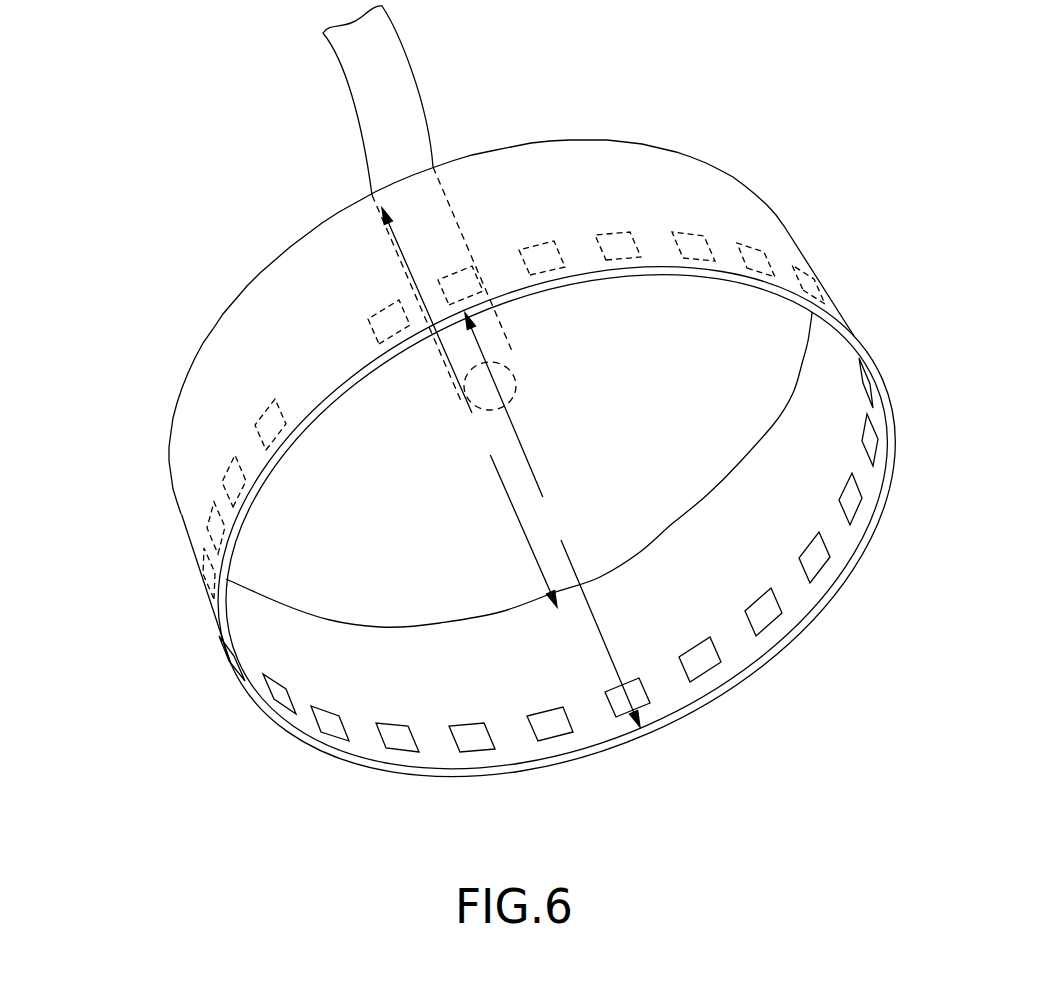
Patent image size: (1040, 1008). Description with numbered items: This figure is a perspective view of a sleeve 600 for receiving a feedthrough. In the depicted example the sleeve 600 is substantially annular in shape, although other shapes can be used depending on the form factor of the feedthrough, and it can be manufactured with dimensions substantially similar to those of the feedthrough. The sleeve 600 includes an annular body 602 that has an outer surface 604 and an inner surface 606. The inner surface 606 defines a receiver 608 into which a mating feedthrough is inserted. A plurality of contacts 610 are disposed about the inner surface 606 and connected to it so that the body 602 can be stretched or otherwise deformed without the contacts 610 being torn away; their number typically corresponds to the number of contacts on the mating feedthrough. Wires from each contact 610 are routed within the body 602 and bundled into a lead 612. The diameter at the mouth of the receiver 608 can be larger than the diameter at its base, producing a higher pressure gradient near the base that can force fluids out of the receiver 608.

The sleeve 600 is at (824, 100).
The annular body 602 is at (525, 172).
The outer surface 604 is at (684, 176).
The inner surface 606 is at (847, 403).
The receiver 608 is at (439, 698).
The contacts 610 is at (695, 665).
The lead 612 is at (373, 126).